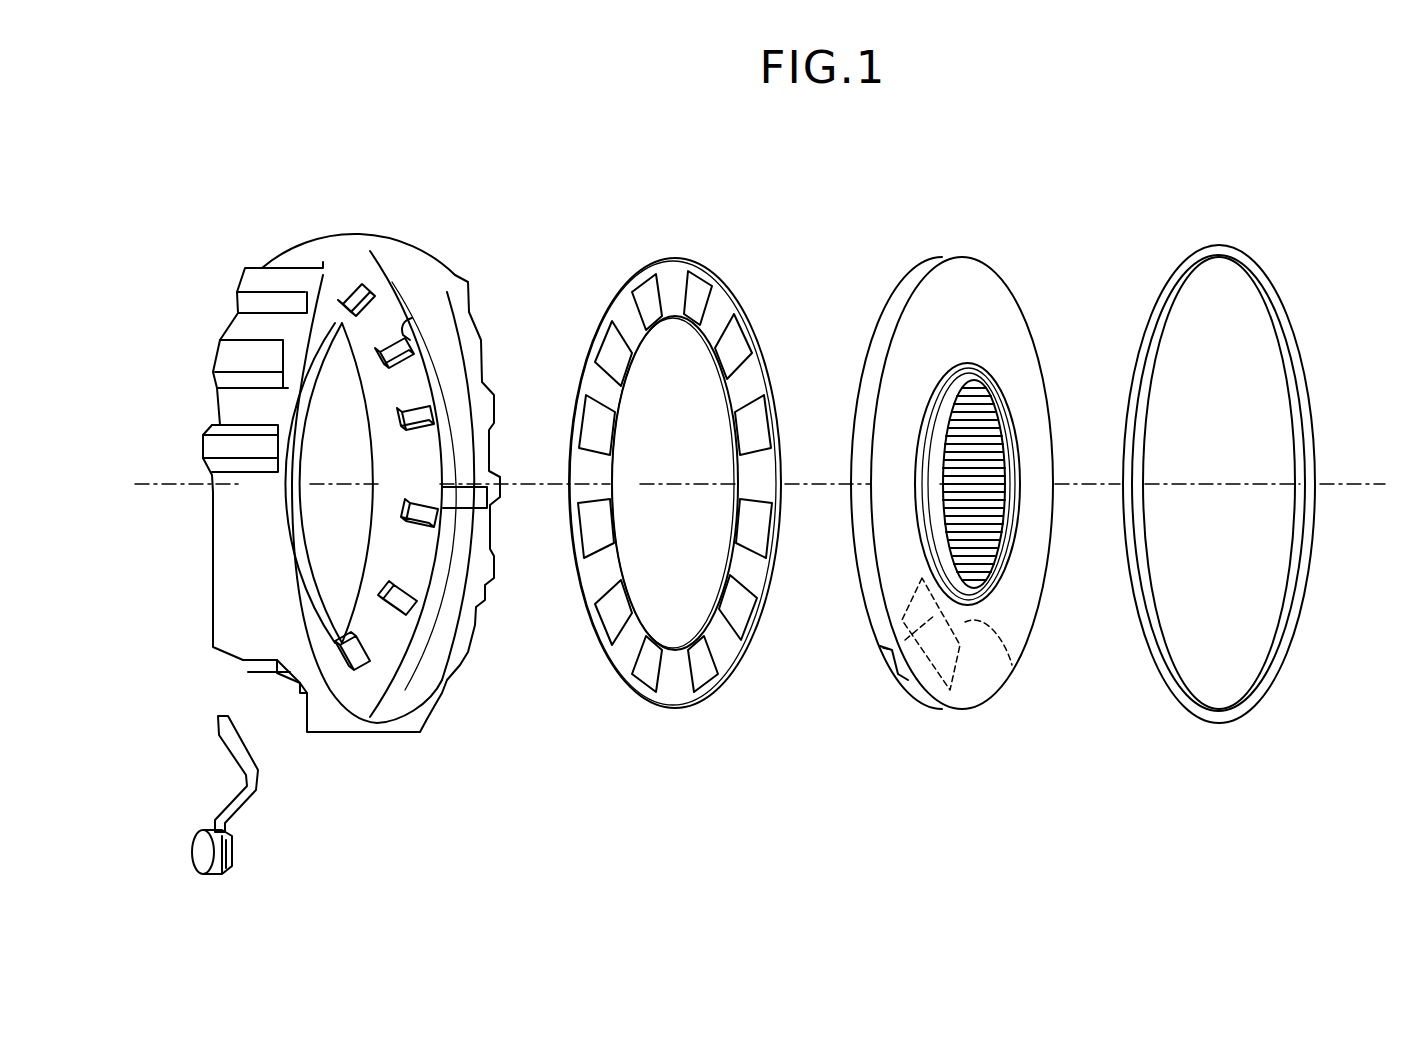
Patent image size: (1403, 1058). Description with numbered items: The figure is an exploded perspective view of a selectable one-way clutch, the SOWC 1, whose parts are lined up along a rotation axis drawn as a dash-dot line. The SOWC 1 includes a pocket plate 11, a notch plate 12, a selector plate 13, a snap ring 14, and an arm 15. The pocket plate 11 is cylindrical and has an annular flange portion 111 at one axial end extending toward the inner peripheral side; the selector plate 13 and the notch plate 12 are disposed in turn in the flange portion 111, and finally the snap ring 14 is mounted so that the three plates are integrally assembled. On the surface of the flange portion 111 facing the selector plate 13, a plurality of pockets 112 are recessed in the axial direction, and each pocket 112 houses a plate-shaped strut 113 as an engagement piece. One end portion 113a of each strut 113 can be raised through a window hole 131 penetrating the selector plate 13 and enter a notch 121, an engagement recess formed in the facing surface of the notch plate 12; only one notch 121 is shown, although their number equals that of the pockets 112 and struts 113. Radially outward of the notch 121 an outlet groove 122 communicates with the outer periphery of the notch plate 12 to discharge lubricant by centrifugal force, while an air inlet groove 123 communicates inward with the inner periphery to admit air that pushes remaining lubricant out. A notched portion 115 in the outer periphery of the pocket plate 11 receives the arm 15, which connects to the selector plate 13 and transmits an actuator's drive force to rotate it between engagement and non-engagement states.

The SOWC 1 is at (203, 199).
The pocket plate 11 is at (351, 758).
The flange portion 111 is at (437, 460).
The pocket 112 is at (427, 572).
The strut 113 is at (410, 360).
The end portion 113a is at (412, 318).
The notched portion 115 is at (245, 678).
The notch plate 12 is at (952, 712).
The notch 121 is at (918, 690).
The outlet groove 122 is at (883, 648).
The air inlet groove 123 is at (1012, 665).
The selector plate 13 is at (672, 710).
The window hole 131 is at (657, 292).
The snap ring 14 is at (1218, 722).
The arm 15 is at (256, 846).